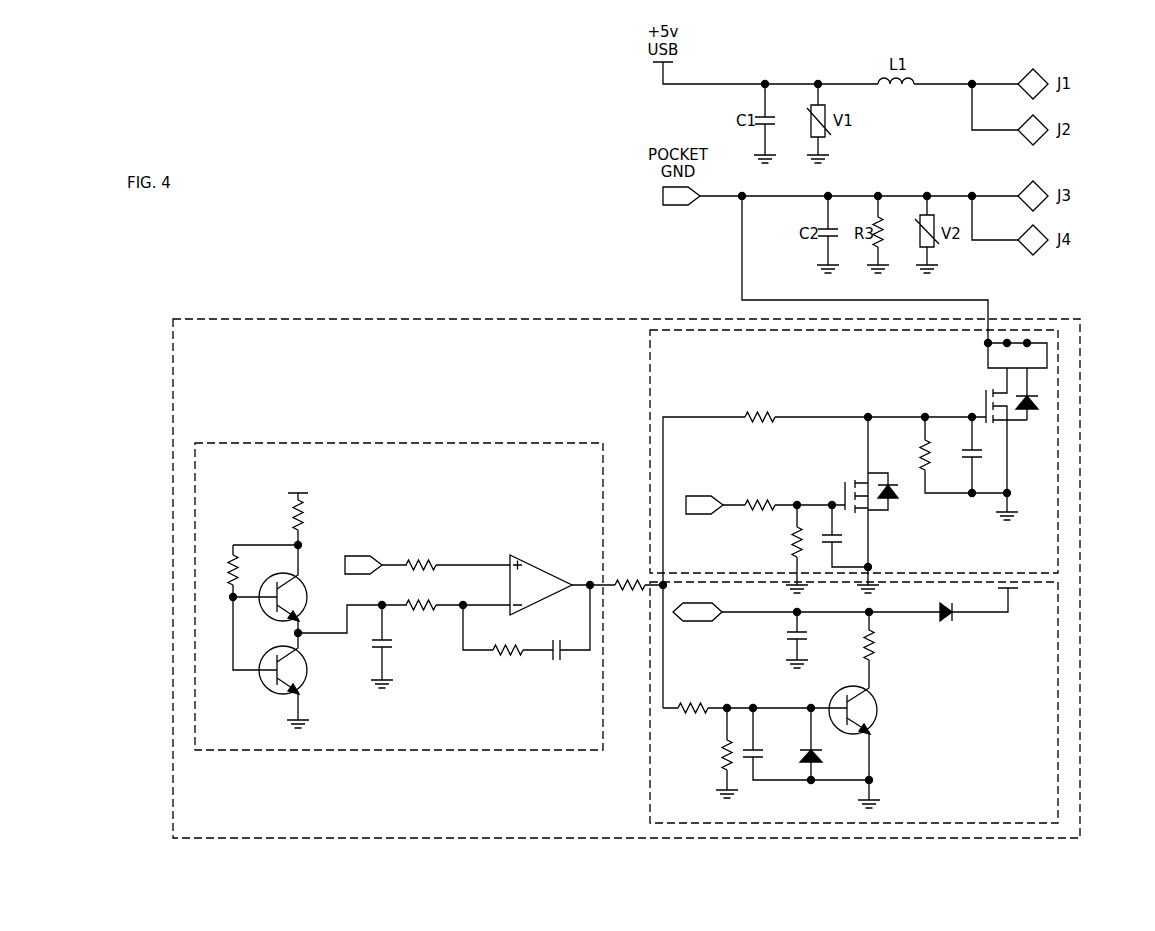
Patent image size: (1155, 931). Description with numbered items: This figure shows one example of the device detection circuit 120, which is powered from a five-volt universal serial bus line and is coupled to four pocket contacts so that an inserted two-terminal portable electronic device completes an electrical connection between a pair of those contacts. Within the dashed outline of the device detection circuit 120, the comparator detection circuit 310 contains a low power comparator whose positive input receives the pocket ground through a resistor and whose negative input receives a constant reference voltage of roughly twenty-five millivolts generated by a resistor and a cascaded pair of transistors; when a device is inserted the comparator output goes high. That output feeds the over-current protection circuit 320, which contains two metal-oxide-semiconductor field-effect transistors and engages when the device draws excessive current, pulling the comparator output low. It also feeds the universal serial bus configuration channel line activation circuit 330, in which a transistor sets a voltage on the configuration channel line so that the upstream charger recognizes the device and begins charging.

The device detection circuit 120 is at (173, 458).
The comparator detection circuit 310 is at (397, 443).
The over-current protection circuit 320 is at (1058, 449).
The universal serial bus configuration channel line activation circuit 330 is at (1058, 699).